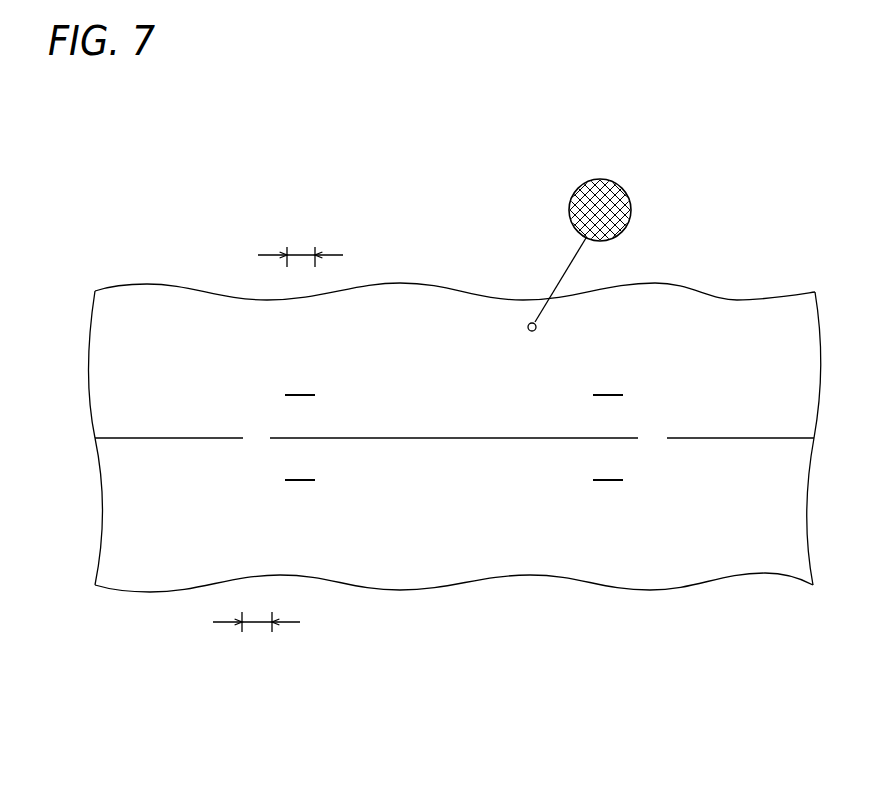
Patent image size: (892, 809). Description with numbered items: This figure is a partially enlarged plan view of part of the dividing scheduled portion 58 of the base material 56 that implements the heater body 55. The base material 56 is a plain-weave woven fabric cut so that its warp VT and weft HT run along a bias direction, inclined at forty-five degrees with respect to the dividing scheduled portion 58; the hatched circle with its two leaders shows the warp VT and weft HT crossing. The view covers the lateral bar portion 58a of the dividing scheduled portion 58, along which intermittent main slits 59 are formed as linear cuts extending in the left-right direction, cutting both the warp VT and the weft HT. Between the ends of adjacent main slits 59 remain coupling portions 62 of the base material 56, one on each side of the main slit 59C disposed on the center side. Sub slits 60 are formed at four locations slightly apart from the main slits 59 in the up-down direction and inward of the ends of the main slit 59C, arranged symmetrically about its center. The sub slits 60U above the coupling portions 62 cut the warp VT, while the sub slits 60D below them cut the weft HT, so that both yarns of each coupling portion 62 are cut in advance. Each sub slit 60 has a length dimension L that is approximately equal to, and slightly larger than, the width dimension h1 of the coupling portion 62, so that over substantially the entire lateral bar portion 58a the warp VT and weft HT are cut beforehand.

The heater body 55 is at (454, 562).
The base material 56 is at (700, 567).
The dividing scheduled portion 58 is at (457, 340).
The lateral bar portion 58a is at (755, 368).
The main slit 59 is at (168, 440).
The main slit disposed on a center side 59C is at (455, 440).
The sub slit 60 is at (456, 440).
The sub slit disposed above the coupling portion 60U is at (298, 388).
The sub slit disposed below the coupling portion 60D is at (297, 485).
The coupling portion 62 is at (257, 437).
The weft HT is at (582, 185).
The warp VT is at (628, 198).
The length dimension L is at (300, 253).
The width dimension h1 is at (257, 625).